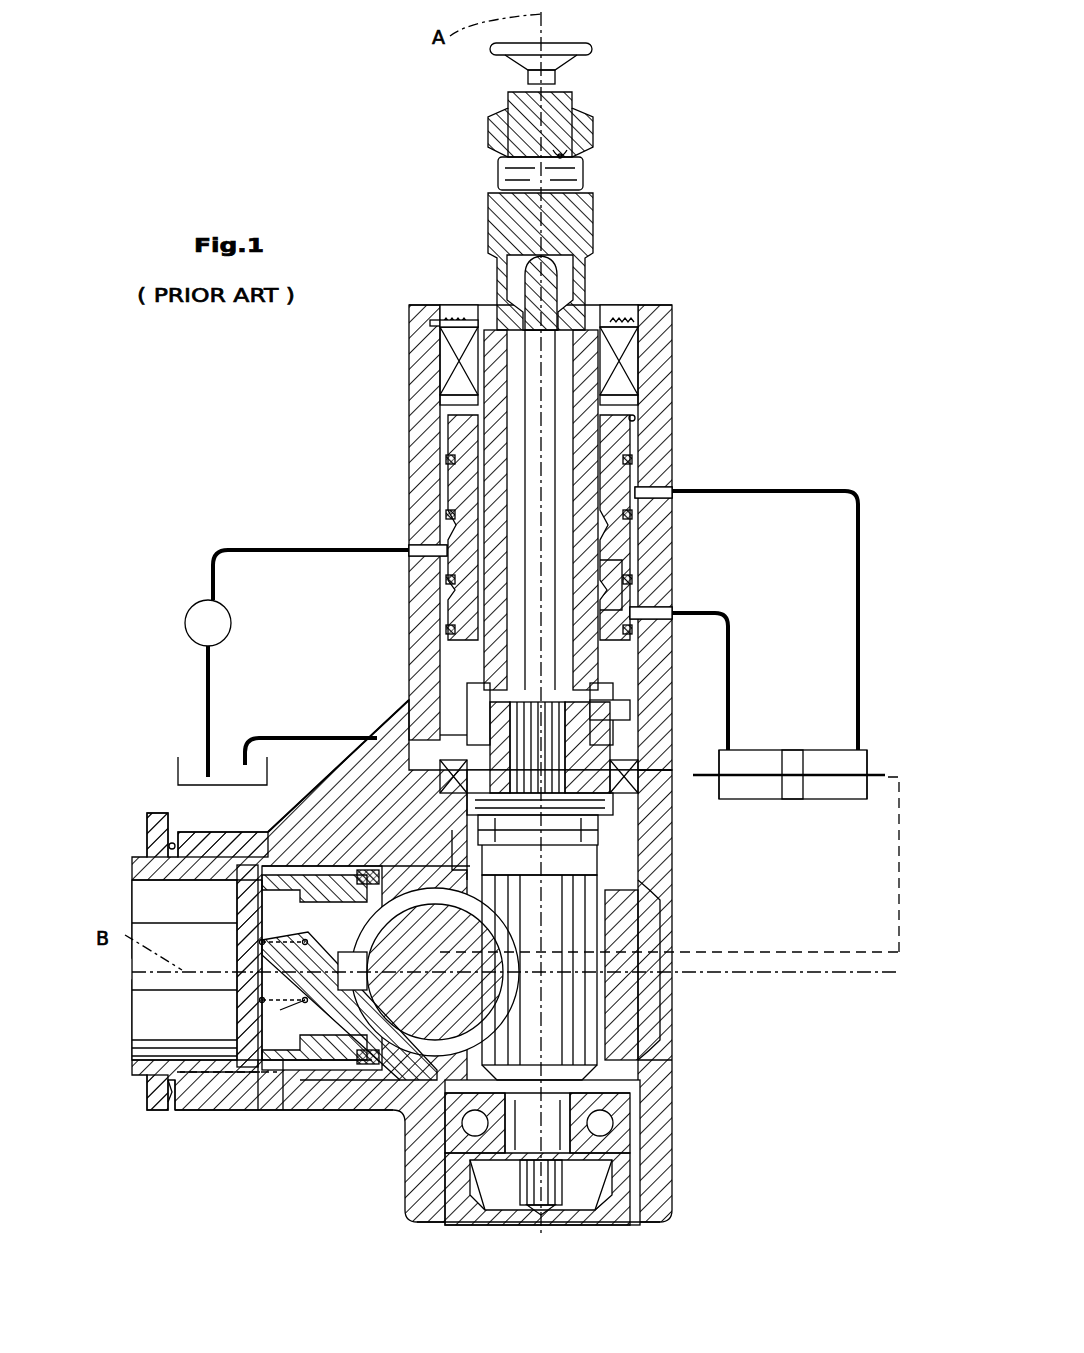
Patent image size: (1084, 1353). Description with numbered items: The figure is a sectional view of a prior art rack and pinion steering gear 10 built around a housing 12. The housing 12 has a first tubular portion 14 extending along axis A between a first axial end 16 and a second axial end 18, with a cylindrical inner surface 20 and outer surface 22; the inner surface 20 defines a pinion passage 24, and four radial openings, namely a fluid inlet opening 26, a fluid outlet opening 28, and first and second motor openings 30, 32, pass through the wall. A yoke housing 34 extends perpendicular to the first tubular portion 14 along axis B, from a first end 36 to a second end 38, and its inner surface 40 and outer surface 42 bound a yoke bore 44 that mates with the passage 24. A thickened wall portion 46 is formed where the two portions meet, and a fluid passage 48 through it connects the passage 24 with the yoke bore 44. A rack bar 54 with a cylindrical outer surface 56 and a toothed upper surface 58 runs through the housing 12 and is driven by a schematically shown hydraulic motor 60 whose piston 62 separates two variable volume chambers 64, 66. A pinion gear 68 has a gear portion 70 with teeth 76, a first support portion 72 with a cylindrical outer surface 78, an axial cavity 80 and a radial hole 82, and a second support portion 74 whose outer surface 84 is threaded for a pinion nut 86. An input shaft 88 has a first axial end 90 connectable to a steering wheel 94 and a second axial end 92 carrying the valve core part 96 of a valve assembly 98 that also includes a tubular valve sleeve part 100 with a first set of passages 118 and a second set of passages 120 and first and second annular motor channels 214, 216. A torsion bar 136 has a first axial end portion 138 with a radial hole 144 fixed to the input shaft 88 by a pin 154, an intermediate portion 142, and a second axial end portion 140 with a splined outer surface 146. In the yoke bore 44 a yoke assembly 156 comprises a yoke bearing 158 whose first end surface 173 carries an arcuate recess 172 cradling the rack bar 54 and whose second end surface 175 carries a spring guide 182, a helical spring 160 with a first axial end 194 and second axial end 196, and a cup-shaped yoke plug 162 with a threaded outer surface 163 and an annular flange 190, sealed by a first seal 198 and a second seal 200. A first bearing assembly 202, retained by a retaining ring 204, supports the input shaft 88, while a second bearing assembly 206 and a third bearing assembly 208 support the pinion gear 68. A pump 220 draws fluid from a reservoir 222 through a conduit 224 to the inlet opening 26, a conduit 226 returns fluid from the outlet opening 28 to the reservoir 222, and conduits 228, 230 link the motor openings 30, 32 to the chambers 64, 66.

The rack and pinion steering gear 10 is at (380, 150).
The housing 12 is at (402, 1183).
The first tubular portion 14 is at (690, 340).
The first axial end 16 is at (653, 305).
The second axial end 18 is at (650, 1225).
The inner surface 20 is at (640, 410).
The outer surface 22 is at (672, 380).
The pinion chamber or passage 24 is at (464, 302).
The fluid inlet opening 26 is at (427, 545).
The fluid outlet opening 28 is at (440, 738).
The first motor opening 30 is at (650, 495).
The second motor opening 32 is at (655, 605).
The yoke housing 34 is at (267, 1115).
The first end 36 is at (168, 1092).
The second end 38 is at (541, 1175).
The inner surface 40 is at (450, 860).
The outer surface 42 is at (275, 1112).
The yoke chamber or yoke bore 44 is at (350, 1118).
The thickened wall portion 46 is at (350, 755).
The fluid passage 48 is at (330, 835).
The rack bar 54 is at (387, 1115).
The outer surface 56 is at (380, 995).
The upper surface 58 is at (630, 985).
The hydraulic motor 60 is at (791, 748).
The piston 62 is at (790, 800).
The variable volume chamber 64 is at (830, 800).
The variable volume chamber 66 is at (750, 800).
The pinion gear 68 is at (605, 926).
The gear portion 70 is at (640, 1047).
The first support portion 72 is at (640, 735).
The second support portion 74 is at (553, 1133).
The teeth 76 is at (585, 1000).
The cylindrical outer surface 78 is at (668, 734).
The axially extending cavity 80 is at (472, 650).
The hole 82 is at (640, 655).
The cylindrical outer surface 84 is at (612, 1078).
The pinion nut 86 is at (500, 1195).
The input shaft 88 is at (485, 224).
The first axial end 90 is at (492, 117).
The second axial end 92 is at (482, 690).
The steering wheel 94 is at (592, 48).
The valve core part 96 is at (470, 648).
The valve assembly 98 is at (640, 555).
The valve sleeve part 100 is at (455, 472).
The first set of passages 118 is at (650, 430).
The second set of passages 120 is at (460, 590).
The torsion bar 136 is at (553, 305).
The first axial end portion 138 is at (553, 125).
The second axial end portion 140 is at (540, 750).
The intermediate portion 142 is at (548, 332).
The radially extending hole 144 is at (565, 158).
The splined outer surface 146 is at (600, 898).
The pin 154 is at (570, 172).
The yoke assembly 156 is at (240, 1100).
The yoke bearing 158 is at (290, 1112).
The spring 160 is at (302, 940).
The yoke plug 162 is at (150, 870).
The threaded outer surface 163 is at (236, 832).
The recess 172 is at (360, 915).
The first end surface 173 is at (539, 972).
The second end surface 175 is at (130, 887).
The spring guide 182 is at (258, 946).
The annular flange 190 is at (175, 1125).
The first axial end 194 is at (258, 1000).
The second axial end 196 is at (303, 1010).
The first seal 198 is at (300, 1080).
The second seal 200 is at (172, 1130).
The first bearing assembly 202 is at (450, 360).
The retaining ring 204 is at (449, 310).
The second bearing assembly 206 is at (560, 765).
The third bearing assembly 208 is at (622, 1110).
The first annular motor channel 214 is at (450, 492).
The second annular motor channel 216 is at (455, 615).
The pump 220 is at (190, 612).
The reservoir 222 is at (175, 768).
The conduit 224 is at (273, 548).
The conduit 226 is at (284, 738).
The conduit 228 is at (733, 490).
The conduit 230 is at (730, 628).